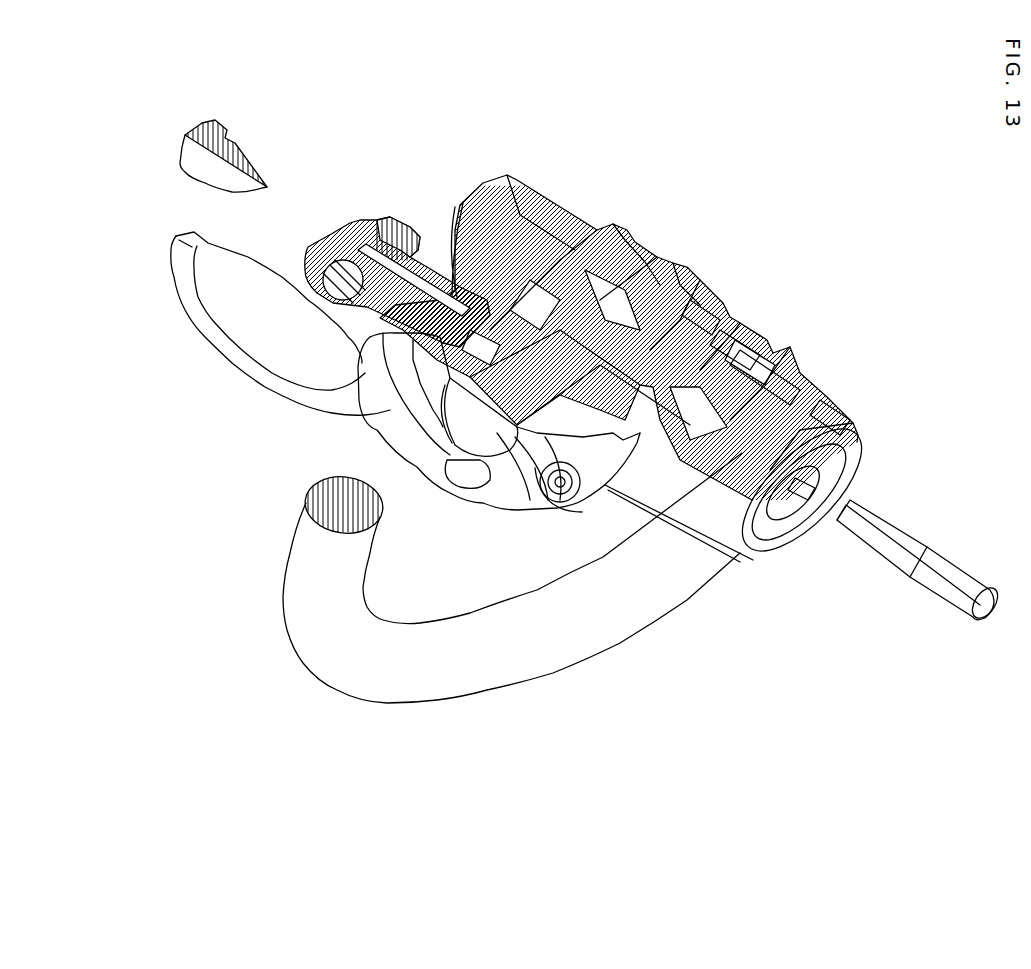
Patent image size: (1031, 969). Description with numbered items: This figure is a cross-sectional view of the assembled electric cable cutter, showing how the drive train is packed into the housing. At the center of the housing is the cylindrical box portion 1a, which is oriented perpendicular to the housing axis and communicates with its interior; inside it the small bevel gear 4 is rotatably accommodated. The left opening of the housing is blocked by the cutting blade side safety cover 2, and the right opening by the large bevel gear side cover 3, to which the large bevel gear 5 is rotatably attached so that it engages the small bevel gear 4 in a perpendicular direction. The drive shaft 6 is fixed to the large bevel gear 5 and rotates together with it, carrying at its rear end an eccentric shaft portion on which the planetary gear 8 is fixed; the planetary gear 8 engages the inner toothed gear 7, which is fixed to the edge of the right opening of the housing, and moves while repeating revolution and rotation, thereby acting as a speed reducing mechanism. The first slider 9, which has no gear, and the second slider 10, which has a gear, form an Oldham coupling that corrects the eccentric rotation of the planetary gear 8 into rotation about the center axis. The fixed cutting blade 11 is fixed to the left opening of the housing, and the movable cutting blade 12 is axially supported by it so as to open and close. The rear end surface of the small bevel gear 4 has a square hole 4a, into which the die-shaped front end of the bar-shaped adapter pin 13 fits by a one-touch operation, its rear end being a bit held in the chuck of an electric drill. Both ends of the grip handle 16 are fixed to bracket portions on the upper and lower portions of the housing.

The cylindrical box portion 1a is at (827, 403).
The cutting blade side safety cover 2 is at (427, 477).
The large bevel gear side cover 3 is at (773, 373).
The small bevel gear 4 is at (847, 417).
The square hole 4a is at (812, 530).
The large bevel gear 5 is at (637, 293).
The drive shaft 6 is at (645, 235).
The inner toothed gear 7 is at (735, 305).
The planetary gear 8 is at (693, 312).
The first slider 9 is at (550, 303).
The second slider 10 is at (518, 317).
The fixed cutting blade 11 is at (238, 150).
The movable cutting blade 12 is at (258, 327).
The adapter pin 13 is at (885, 565).
The grip handle 16 is at (320, 652).